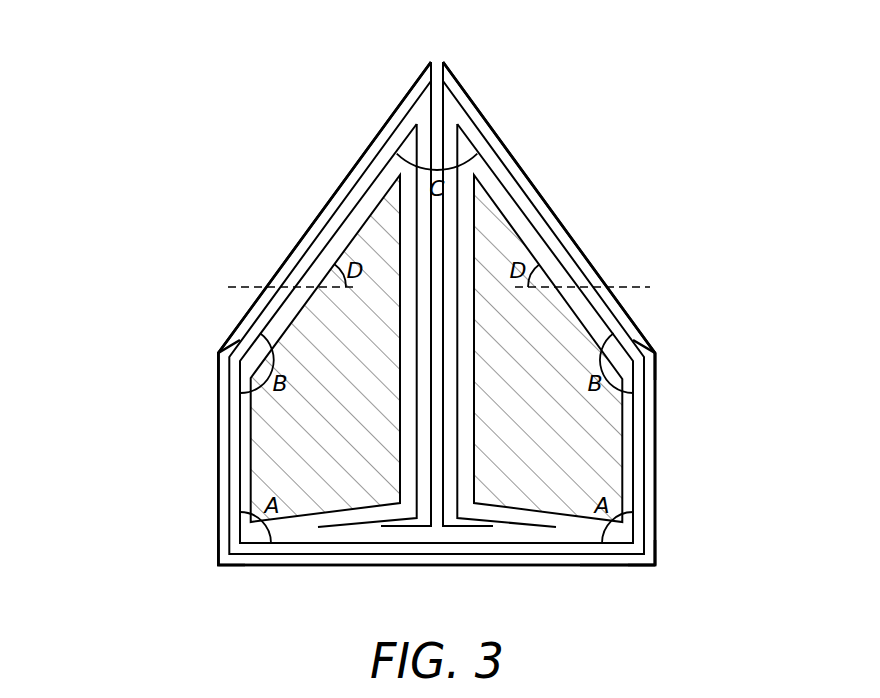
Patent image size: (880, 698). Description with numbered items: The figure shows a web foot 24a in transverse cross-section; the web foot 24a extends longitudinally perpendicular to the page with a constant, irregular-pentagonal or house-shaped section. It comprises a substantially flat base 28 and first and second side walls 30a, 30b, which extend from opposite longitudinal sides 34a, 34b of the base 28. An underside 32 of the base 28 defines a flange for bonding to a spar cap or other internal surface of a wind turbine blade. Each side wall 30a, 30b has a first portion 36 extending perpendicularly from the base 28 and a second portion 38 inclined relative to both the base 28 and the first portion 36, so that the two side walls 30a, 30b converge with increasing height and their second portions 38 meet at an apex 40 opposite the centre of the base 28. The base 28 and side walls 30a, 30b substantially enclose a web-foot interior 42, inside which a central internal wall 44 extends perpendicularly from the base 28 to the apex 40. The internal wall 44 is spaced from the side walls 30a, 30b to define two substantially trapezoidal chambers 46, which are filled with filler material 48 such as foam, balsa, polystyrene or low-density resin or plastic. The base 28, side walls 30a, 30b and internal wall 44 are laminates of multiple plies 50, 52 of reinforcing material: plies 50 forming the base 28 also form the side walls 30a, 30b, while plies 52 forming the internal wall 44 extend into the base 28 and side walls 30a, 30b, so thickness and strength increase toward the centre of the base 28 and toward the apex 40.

The web foot 24a is at (218, 83).
The base 28 is at (368, 569).
The first side wall 30a is at (208, 349).
The second side wall 30b is at (665, 349).
The underside 32 is at (627, 570).
The longitudinal side 34a is at (208, 552).
The longitudinal side 34b is at (667, 552).
The first portion 36 is at (119, 357).
The second portion 38 is at (331, 49).
The apex 40 is at (433, 58).
The web-foot interior 42 is at (572, 330).
The internal wall 44 is at (460, 376).
The chambers 46 is at (396, 513).
The filler material 48 is at (265, 455).
The plies 50 is at (313, 543).
The plies 52 is at (488, 527).